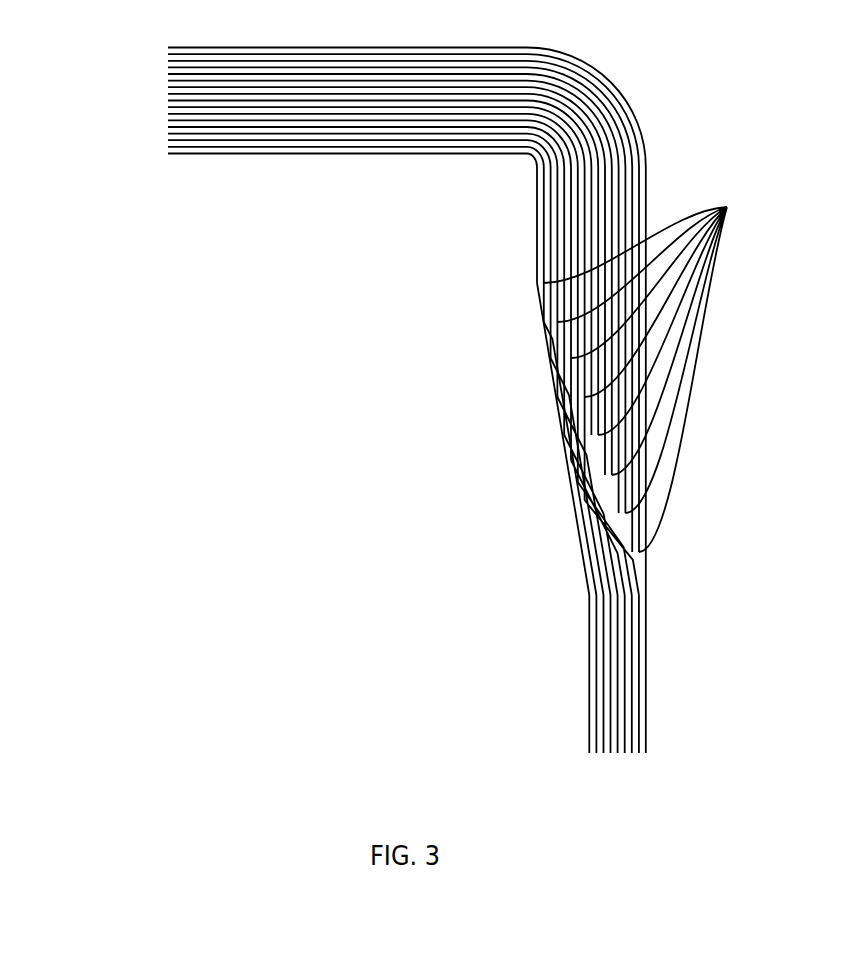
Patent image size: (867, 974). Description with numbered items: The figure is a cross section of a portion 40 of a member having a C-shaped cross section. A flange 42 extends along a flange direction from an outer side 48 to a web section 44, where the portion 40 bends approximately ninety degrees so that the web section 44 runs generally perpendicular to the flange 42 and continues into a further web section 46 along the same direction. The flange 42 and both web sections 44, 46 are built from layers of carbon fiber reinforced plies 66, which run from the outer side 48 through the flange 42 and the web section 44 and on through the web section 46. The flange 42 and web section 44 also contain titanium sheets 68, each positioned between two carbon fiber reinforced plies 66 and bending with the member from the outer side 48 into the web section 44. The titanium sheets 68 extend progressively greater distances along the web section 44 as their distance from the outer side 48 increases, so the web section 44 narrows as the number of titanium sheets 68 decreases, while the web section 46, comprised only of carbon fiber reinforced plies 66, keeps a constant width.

The portion 40 is at (297, 466).
The flange 42 is at (311, 184).
The web section 44 is at (492, 172).
The web section 46 is at (492, 597).
The outer side 48 is at (142, 101).
The carbon fiber reinforced plies 66 is at (647, 766).
The titanium sheets 68 is at (727, 207).